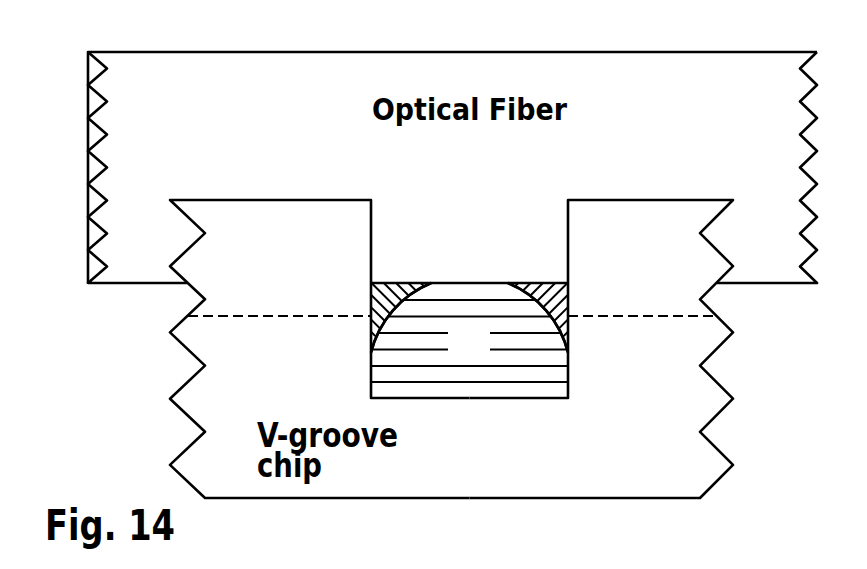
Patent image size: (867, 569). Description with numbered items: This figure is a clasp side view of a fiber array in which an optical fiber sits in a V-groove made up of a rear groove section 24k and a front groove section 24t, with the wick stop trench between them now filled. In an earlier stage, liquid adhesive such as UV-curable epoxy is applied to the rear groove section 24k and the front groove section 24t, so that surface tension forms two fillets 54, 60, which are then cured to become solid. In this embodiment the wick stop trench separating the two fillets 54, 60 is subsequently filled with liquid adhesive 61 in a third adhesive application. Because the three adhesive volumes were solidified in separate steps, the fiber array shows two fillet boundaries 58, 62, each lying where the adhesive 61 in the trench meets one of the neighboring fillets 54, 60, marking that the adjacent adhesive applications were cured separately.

The rear groove section 24k is at (262, 302).
The front groove section 24t is at (643, 298).
The fillet 54 is at (380, 293).
The fillet boundary 58 is at (412, 290).
The fillet boundary 62 is at (523, 288).
The fillet 60 is at (550, 290).
The liquid adhesive 61 is at (487, 358).